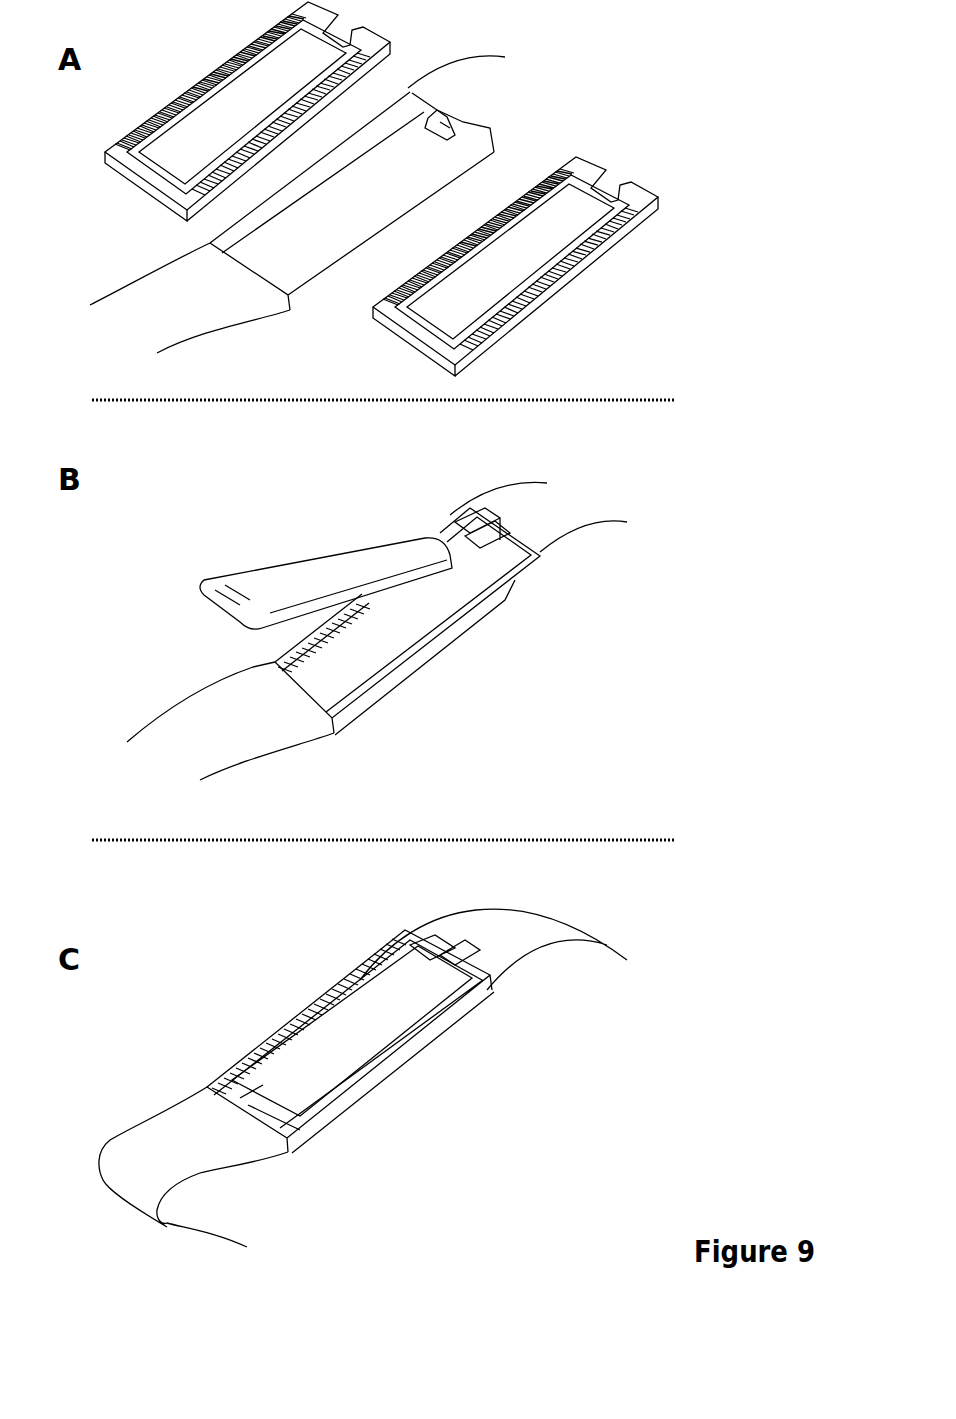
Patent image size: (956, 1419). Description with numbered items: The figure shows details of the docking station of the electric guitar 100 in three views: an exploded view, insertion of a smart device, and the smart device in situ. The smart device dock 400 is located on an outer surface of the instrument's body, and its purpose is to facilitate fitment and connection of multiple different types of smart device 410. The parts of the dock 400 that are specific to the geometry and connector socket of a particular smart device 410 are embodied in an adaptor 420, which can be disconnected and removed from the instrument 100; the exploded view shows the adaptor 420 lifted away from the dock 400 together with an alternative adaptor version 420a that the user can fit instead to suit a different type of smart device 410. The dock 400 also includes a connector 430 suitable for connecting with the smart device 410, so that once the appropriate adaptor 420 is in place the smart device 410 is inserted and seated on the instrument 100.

The electric guitar 100 is at (532, 84).
The smart device dock 400 is at (498, 156).
The smart device 410 is at (360, 568).
The adaptor 420 is at (385, 52).
The alternative adaptor version 420a is at (640, 188).
The connector 430 is at (450, 119).